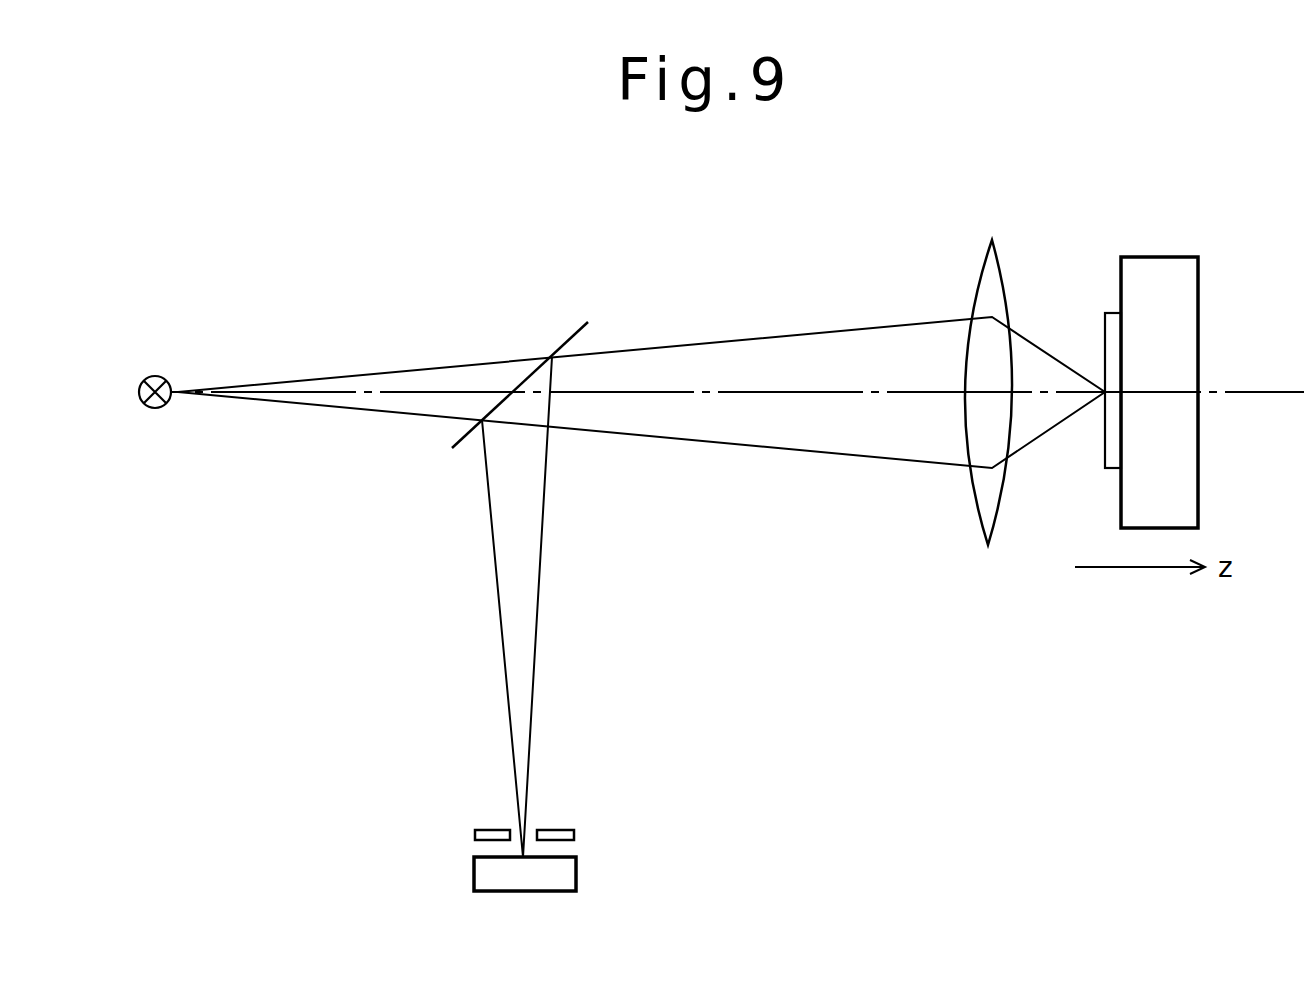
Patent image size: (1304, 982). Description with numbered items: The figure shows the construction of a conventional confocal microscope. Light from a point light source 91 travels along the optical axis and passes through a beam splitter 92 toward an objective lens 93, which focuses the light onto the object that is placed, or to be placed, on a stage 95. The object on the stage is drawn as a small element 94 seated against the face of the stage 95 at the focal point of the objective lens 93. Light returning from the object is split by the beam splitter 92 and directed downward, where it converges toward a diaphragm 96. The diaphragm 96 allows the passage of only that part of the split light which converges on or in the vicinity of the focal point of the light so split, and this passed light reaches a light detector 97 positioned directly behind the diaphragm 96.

The point light source 91 is at (159, 378).
The beam splitter 92 is at (570, 335).
The objective lens 93 is at (1000, 265).
The object / specimen 94 is at (1105, 315).
The stage 95 is at (1158, 257).
The diaphragm 96 is at (553, 830).
The light detector 97 is at (578, 877).